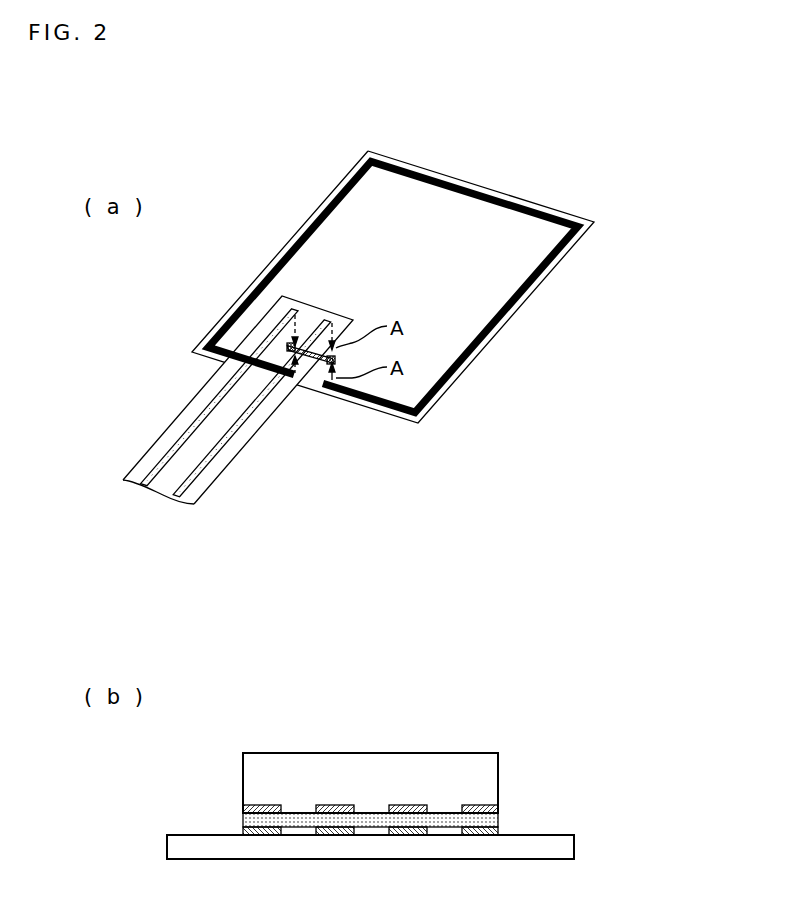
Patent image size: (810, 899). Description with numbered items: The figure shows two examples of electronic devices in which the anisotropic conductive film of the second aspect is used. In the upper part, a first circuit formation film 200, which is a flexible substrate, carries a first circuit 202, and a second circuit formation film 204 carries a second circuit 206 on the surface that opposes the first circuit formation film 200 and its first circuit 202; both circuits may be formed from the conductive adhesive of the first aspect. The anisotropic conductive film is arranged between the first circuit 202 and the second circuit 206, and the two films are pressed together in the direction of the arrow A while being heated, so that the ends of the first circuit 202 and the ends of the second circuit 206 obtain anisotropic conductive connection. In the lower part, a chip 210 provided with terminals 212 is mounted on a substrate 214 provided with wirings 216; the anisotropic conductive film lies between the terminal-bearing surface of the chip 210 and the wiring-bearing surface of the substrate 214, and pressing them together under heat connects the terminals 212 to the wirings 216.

The first circuit formation film 200 is at (544, 203).
The first circuit 202 is at (549, 268).
The second circuit formation film 204 is at (207, 477).
The second circuit 206 is at (253, 413).
The chip 210 is at (490, 770).
The terminals 212 is at (246, 807).
The substrate 214 is at (565, 847).
The wirings 216 is at (498, 829).